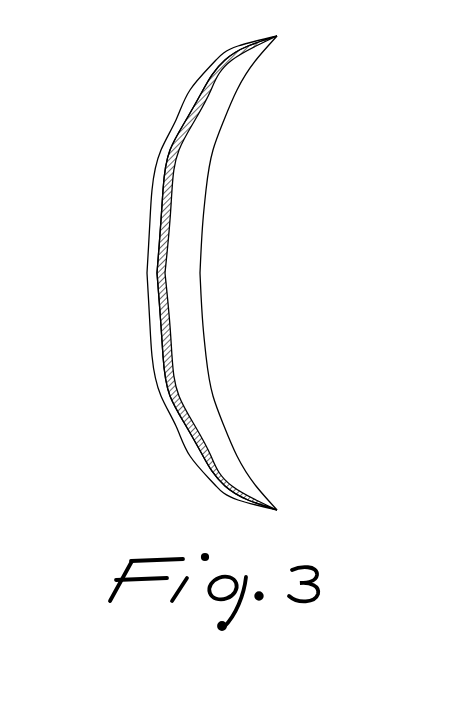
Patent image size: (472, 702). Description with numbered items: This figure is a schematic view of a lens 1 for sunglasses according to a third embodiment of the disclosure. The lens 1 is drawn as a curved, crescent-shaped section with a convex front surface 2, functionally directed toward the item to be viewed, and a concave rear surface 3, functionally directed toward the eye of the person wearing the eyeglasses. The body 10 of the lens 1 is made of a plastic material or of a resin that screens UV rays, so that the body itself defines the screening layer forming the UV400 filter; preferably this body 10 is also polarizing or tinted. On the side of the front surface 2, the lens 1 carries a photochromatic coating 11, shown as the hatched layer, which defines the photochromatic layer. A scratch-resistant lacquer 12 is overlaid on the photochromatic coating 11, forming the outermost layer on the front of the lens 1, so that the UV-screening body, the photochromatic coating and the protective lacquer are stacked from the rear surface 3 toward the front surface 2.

The lens 1 is at (203, 273).
The front surface 2 is at (150, 222).
The rear surface 3 is at (198, 334).
The body 10 is at (268, 273).
The photochromatic coating 11 is at (162, 366).
The scratch-resistant lacquer 12 is at (153, 282).